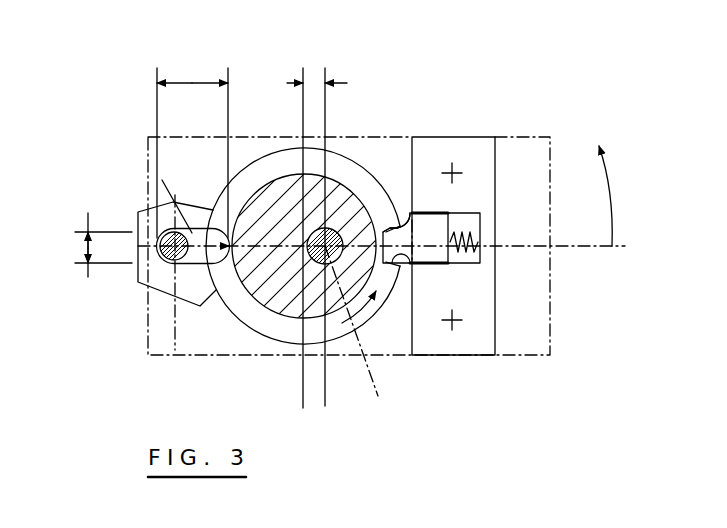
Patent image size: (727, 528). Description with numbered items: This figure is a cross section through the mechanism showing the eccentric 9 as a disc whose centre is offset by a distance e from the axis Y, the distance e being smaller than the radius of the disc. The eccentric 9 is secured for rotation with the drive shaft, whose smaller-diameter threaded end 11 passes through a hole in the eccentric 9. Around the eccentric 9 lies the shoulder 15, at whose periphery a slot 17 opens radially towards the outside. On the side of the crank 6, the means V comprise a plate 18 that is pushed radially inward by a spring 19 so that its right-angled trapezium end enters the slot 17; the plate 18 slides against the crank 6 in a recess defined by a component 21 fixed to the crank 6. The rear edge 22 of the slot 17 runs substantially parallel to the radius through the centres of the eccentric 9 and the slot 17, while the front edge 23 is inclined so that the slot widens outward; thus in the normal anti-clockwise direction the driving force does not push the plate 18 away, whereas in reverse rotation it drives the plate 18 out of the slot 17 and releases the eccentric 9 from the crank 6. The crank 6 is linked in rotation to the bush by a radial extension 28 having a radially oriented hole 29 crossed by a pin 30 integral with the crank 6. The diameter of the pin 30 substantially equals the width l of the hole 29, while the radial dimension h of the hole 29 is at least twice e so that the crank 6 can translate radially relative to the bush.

The crank 6 is at (552, 306).
The eccentric 9 is at (275, 195).
The end of the shaft 11 is at (315, 262).
The shoulder 15 is at (255, 312).
The slot 17 is at (394, 226).
The plate 18 is at (450, 265).
The spring 19 is at (470, 230).
The component 21 is at (442, 150).
The rear edge of the slot 22 is at (392, 264).
The front edge of the slot 23 is at (405, 213).
The radial extension 28 is at (190, 283).
The hole 29 is at (192, 233).
The pin 30 is at (162, 232).
The means V is at (450, 205).
The axis Y is at (357, 329).
The distance e is at (317, 233).
The radial dimension of the hole h is at (192, 147).
The width of the hole l is at (87, 250).